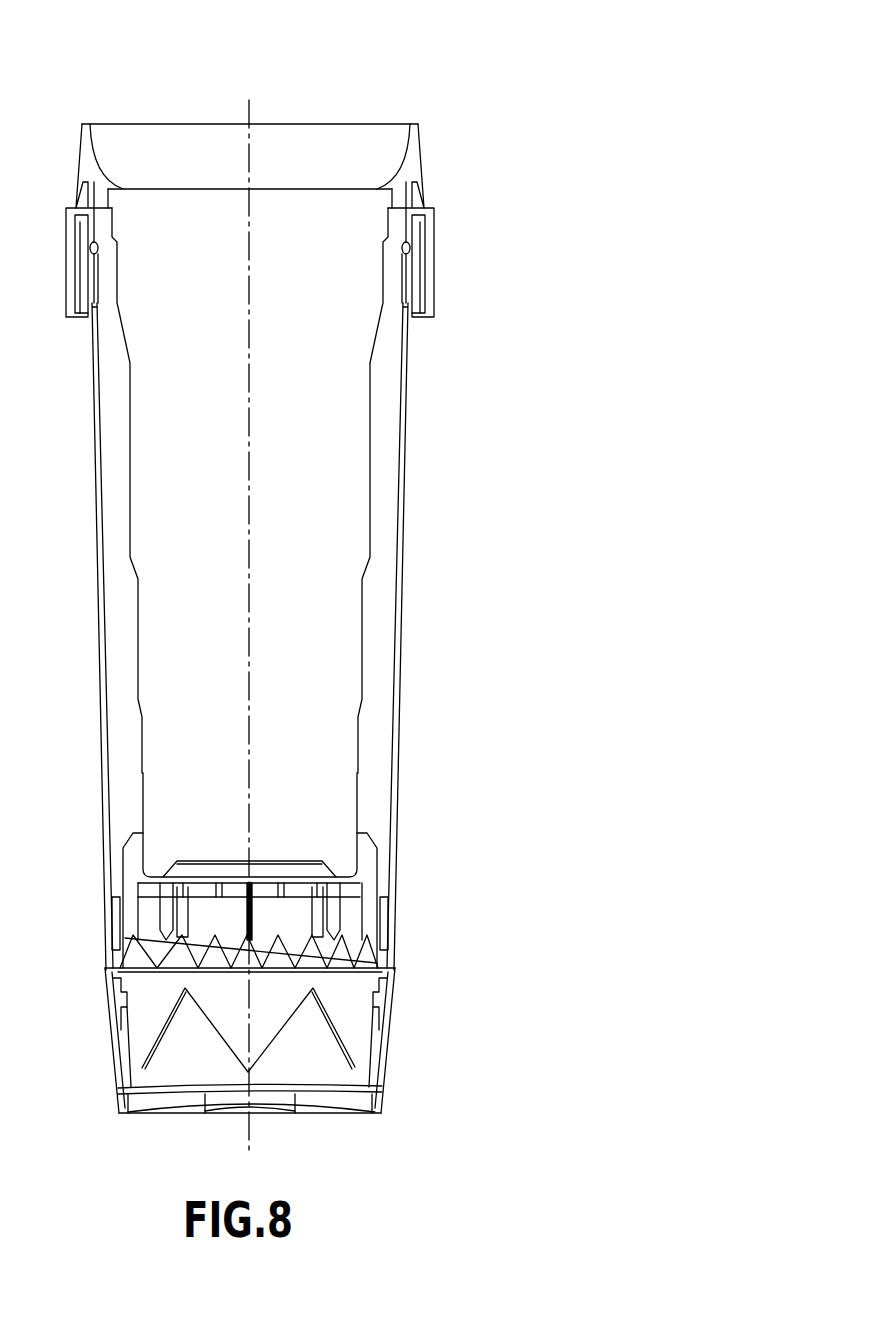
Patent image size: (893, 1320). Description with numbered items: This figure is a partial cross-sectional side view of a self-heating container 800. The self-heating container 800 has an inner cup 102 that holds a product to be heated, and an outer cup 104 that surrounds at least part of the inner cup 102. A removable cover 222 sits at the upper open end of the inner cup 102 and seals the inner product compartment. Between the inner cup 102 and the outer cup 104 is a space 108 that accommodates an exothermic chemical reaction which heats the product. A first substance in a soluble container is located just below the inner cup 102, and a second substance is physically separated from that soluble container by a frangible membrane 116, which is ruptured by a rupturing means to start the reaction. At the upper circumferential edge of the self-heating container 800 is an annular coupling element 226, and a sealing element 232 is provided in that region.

The self-heating container 800 is at (465, 102).
The removable cover 222 is at (320, 114).
The annular coupling element 226 is at (447, 173).
The sealing element 232 is at (409, 250).
The inner cup 102 is at (371, 495).
The space 108 is at (380, 642).
The outer cup 104 is at (404, 707).
The frangible membrane 116 is at (330, 962).